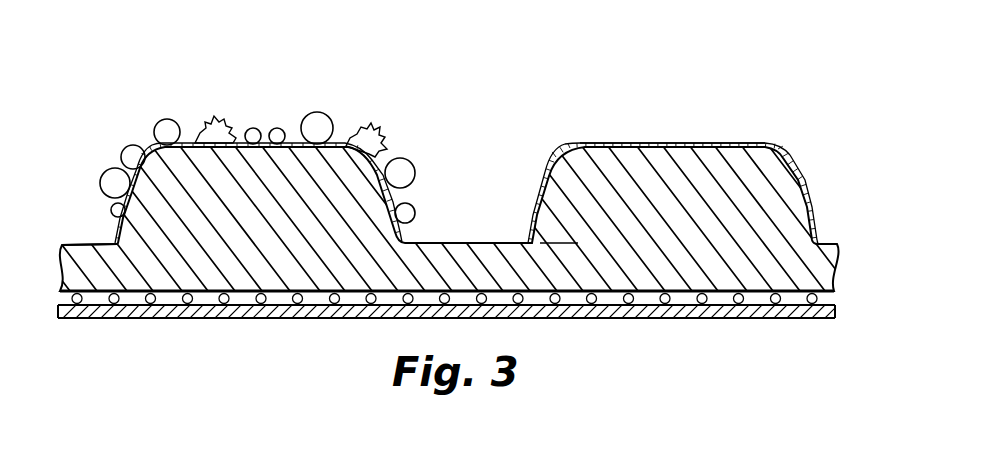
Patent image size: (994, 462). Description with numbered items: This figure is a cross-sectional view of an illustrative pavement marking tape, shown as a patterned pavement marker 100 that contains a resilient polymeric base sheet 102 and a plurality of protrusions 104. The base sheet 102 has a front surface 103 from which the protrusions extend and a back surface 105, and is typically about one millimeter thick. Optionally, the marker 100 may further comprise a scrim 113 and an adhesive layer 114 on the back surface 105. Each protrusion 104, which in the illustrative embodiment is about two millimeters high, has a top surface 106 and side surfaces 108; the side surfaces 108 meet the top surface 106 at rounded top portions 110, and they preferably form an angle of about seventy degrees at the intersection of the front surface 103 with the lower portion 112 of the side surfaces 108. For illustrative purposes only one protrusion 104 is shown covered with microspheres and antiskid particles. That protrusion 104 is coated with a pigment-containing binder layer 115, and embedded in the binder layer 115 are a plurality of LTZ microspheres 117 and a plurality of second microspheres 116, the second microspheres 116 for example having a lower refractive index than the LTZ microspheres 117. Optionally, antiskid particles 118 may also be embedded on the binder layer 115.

The patterned pavement marker 100 is at (746, 145).
The polymeric base sheet 102 is at (535, 280).
The front surface 103 is at (92, 243).
The protrusion 104 is at (238, 173).
The back surface 105 is at (275, 302).
The top surface 106 is at (593, 143).
The side surfaces 108 is at (541, 186).
The rounded top portions 110 is at (792, 158).
The lower portion of side surfaces 112 is at (814, 223).
The scrim 113 is at (80, 305).
The adhesive layer 114 is at (160, 318).
The pigment-containing binder layer 115 is at (633, 143).
The second microspheres 116 is at (167, 130).
The LTZ microspheres 117 is at (275, 133).
The antiskid particles 118 is at (218, 116).